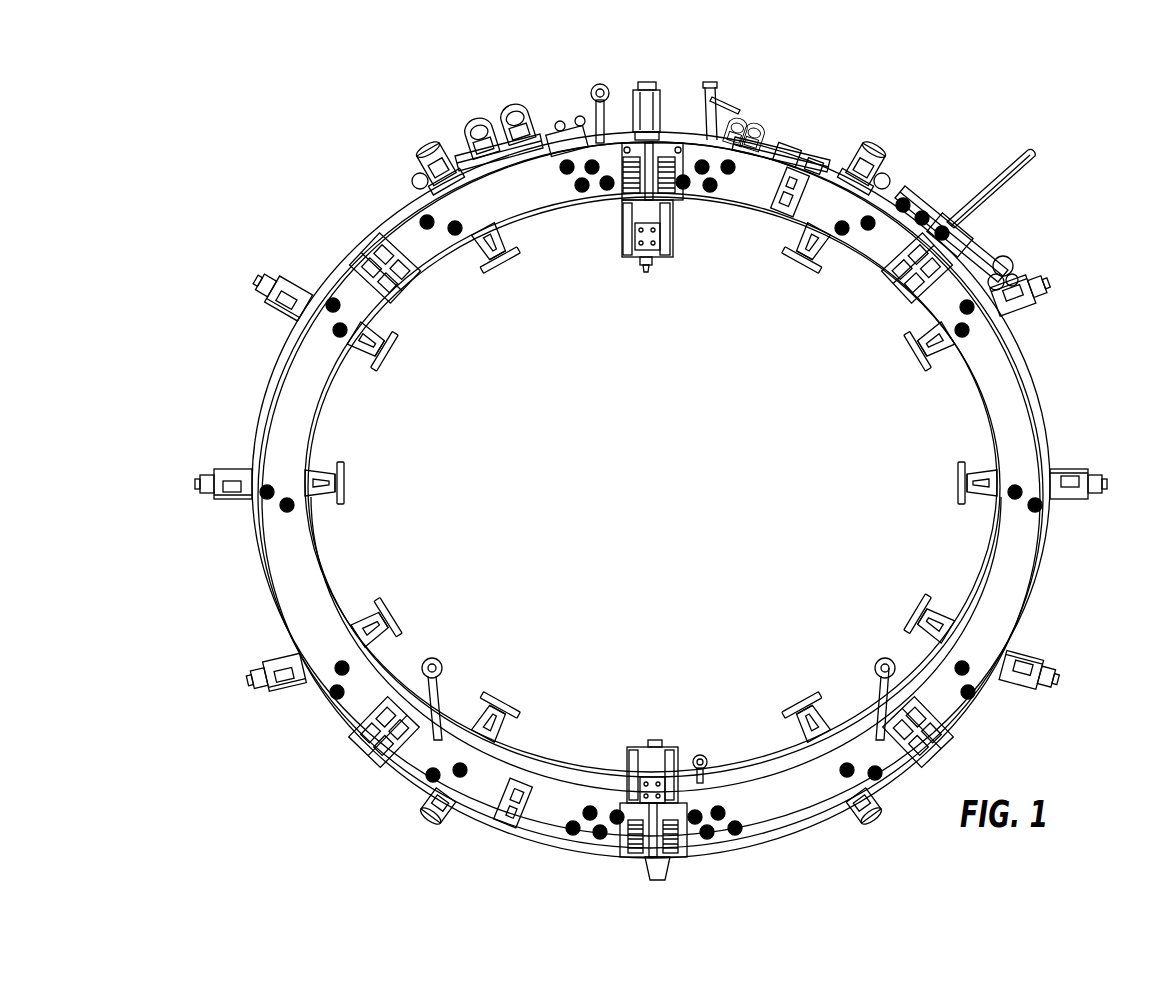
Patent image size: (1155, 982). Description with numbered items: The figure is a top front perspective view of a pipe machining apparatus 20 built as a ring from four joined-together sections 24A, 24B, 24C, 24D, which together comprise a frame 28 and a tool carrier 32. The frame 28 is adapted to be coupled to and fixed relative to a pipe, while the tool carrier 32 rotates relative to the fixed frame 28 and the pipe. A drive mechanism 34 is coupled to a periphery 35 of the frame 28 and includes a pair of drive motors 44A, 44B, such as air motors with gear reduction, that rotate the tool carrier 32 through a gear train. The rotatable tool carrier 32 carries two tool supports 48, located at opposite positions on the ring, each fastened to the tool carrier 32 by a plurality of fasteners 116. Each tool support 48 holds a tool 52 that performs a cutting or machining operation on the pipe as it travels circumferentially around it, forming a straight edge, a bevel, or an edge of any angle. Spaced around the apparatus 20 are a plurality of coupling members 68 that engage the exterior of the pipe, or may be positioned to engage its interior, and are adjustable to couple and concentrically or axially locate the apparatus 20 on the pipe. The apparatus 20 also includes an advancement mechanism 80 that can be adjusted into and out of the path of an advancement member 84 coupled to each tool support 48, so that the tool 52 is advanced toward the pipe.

The pipe machining apparatus 20 is at (992, 103).
The section 24A is at (1064, 530).
The section 24B is at (824, 831).
The section 24C is at (236, 530).
The section 24D is at (818, 150).
The frame 28 is at (325, 277).
The tool carrier 32 is at (320, 395).
The drive mechanism 34 is at (610, 115).
The periphery 35 is at (395, 212).
The drive motor 44A is at (469, 117).
The drive motor 44B is at (518, 103).
The tool support 48 is at (639, 476).
The tool 52 is at (646, 262).
The coupling member 68 is at (631, 85).
The advancement mechanism 80 is at (747, 106).
The advancement member 84 is at (658, 140).
The fastener 116 is at (625, 205).